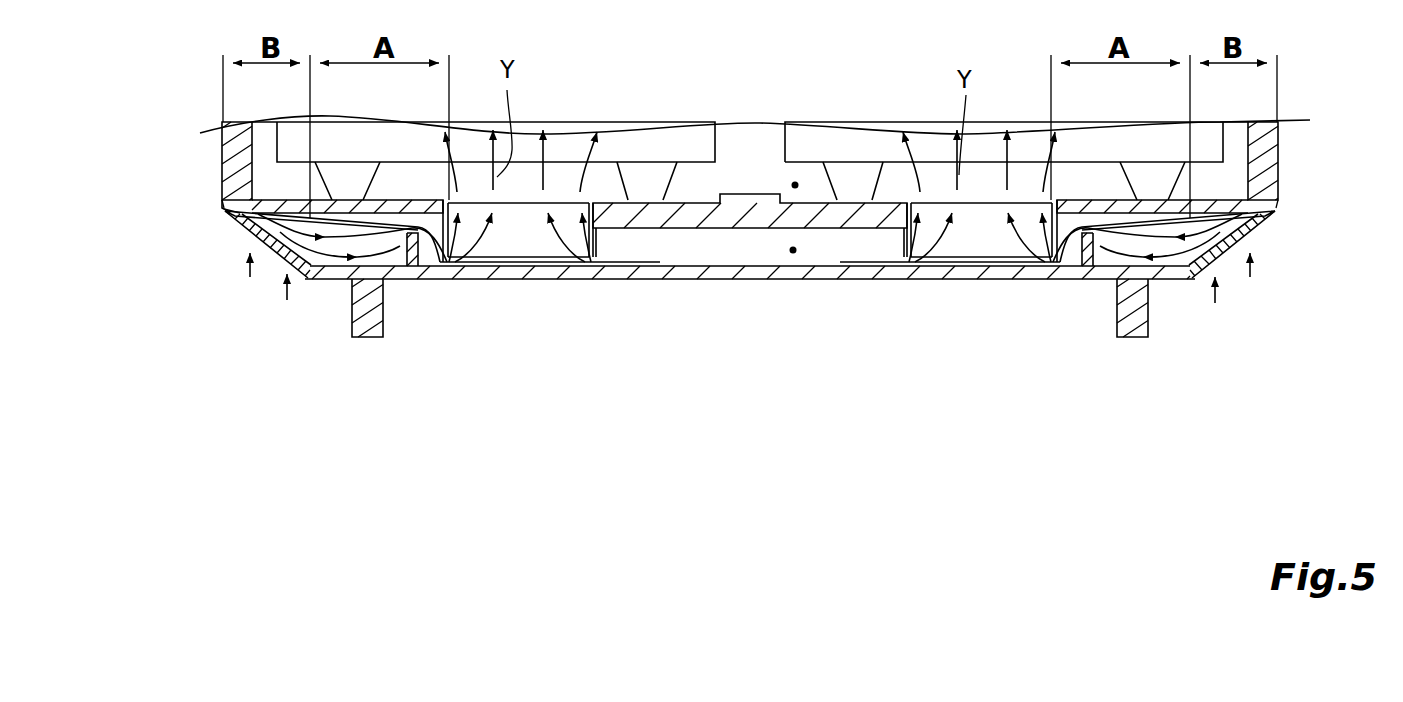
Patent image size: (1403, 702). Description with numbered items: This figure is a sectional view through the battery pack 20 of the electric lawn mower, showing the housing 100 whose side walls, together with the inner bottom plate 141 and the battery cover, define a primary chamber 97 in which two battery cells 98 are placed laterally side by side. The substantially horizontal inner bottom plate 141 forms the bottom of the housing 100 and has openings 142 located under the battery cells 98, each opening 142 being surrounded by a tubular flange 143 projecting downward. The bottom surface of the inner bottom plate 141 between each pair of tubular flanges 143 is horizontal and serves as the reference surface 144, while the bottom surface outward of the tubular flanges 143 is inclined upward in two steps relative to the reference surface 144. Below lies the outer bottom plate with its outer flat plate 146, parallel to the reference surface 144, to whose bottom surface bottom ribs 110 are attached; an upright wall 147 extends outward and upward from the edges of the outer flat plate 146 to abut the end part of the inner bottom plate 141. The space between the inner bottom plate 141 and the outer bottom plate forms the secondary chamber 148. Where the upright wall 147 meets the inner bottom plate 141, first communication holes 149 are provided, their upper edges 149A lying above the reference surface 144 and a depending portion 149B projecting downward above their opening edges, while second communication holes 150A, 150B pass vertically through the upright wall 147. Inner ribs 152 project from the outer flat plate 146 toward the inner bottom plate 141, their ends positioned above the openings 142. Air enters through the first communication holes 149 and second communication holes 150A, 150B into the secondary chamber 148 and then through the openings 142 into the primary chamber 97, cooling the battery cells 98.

The battery pack 20 is at (1297, 156).
The primary chamber 97 is at (795, 181).
The battery cells 98 is at (652, 140).
The housing 100 is at (1282, 137).
The bottom ribs 110 is at (373, 339).
The inner bottom plate 141 is at (1092, 212).
The openings 142 is at (530, 250).
The tubular flange 143 is at (598, 242).
The reference surface 144 is at (743, 240).
The outer flat plate 146 is at (688, 281).
The upright wall 147 is at (247, 223).
The secondary chamber 148 is at (793, 254).
The first communication holes 149 is at (242, 218).
The upper edges of the first communication holes 149A is at (223, 192).
The depending portion 149B is at (226, 210).
The second communication holes 150A is at (308, 282).
The second communication holes 150B is at (273, 260).
The inner ribs 152 is at (414, 268).